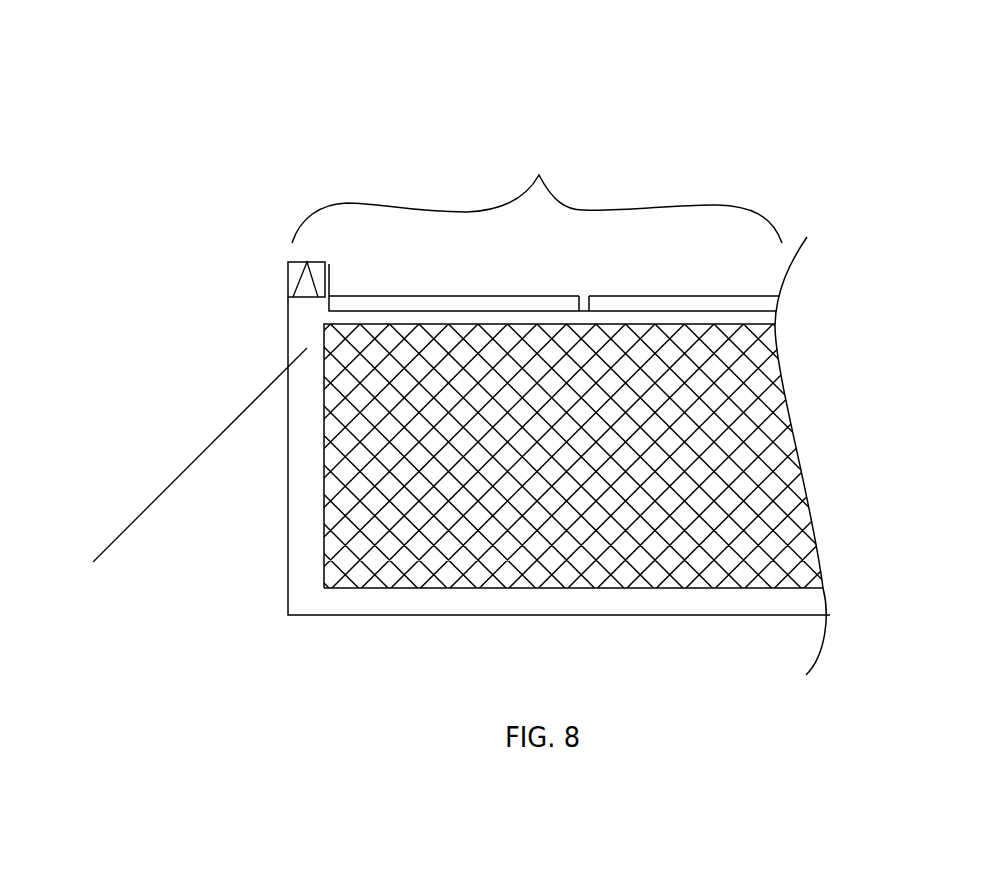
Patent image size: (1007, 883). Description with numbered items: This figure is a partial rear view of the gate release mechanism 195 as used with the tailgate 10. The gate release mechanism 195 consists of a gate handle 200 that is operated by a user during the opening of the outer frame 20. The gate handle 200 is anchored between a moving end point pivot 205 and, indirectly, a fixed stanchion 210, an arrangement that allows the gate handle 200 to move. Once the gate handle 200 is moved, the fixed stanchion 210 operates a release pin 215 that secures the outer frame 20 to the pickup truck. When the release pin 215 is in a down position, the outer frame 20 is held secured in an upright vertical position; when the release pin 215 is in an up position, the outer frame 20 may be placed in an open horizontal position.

The tailgate 10 is at (96, 145).
The outer frame 20 is at (305, 463).
The gate release mechanism 195 is at (539, 175).
The gate handle 200 is at (330, 277).
The moving end point pivot 205 is at (580, 296).
The fixed stanchion 210 is at (302, 297).
The release pin 215 is at (288, 287).